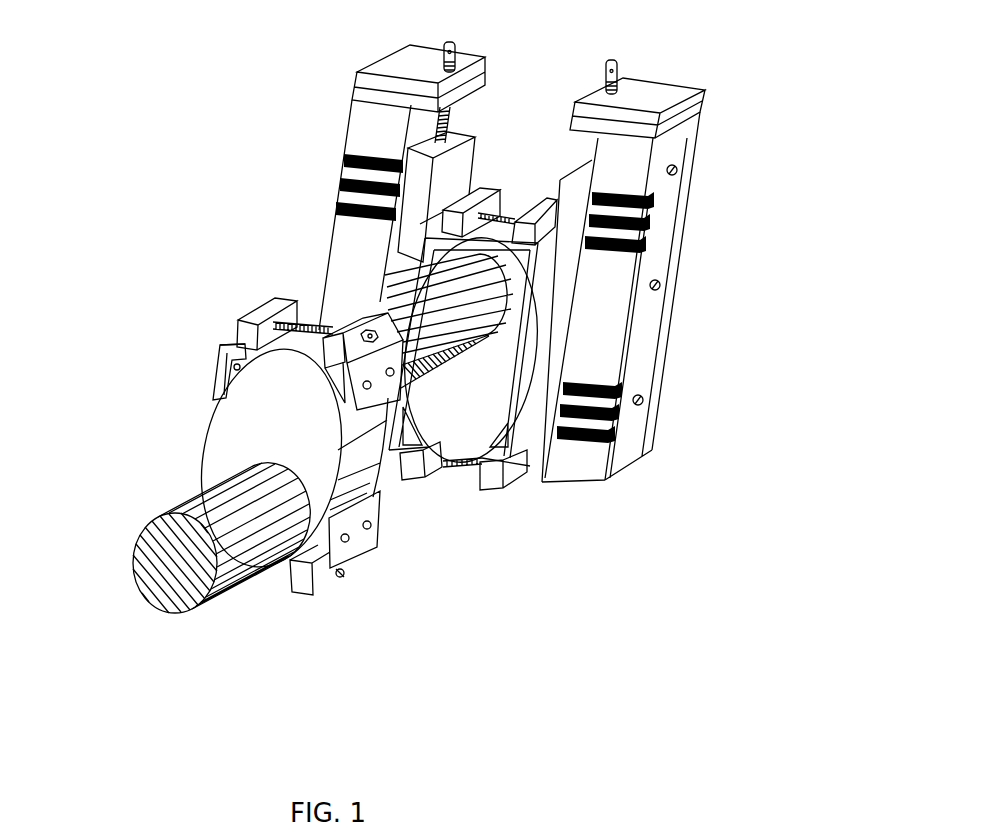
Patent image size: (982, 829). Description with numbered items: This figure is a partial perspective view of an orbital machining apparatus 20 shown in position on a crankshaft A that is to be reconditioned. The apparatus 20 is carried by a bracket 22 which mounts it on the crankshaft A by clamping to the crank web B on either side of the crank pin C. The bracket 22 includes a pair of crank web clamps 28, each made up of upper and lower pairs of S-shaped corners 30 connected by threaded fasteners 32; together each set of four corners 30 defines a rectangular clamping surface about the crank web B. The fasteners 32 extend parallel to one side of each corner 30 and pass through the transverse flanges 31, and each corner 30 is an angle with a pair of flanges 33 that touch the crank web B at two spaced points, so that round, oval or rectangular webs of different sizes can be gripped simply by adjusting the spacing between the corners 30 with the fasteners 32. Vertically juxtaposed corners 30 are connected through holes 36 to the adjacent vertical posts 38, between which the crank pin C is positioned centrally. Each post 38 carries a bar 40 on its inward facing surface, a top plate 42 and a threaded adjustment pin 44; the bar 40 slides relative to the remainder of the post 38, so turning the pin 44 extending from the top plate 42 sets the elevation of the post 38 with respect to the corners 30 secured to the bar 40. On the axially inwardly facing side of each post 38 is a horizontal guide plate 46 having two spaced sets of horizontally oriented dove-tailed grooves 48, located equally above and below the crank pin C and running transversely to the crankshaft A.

The orbital machining apparatus 20 is at (798, 183).
The bracket 22 is at (226, 256).
The crank web clamps 28 is at (197, 347).
The S-shaped corners 30 is at (233, 345).
The transverse flanges 31 is at (275, 297).
The threaded fasteners 32 is at (318, 320).
The flanges 33 is at (238, 353).
The holes 36 is at (367, 527).
The vertical posts 38 is at (718, 88).
The bar 40 is at (460, 140).
The top plate 42 is at (481, 62).
The threaded adjustment pin 44 is at (455, 43).
The horizontal guide plates 46 is at (633, 325).
The dove-tailed grooves 48 is at (628, 255).
The crankshaft A is at (158, 600).
The crank web B is at (367, 482).
The crank pin C is at (404, 300).